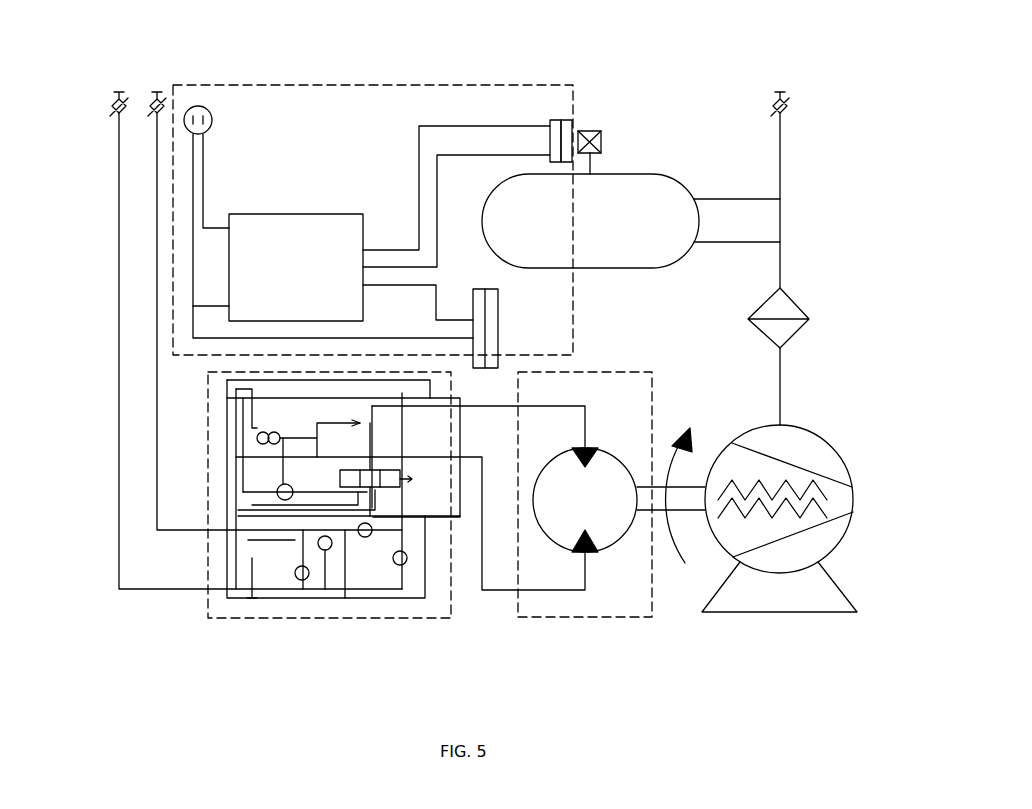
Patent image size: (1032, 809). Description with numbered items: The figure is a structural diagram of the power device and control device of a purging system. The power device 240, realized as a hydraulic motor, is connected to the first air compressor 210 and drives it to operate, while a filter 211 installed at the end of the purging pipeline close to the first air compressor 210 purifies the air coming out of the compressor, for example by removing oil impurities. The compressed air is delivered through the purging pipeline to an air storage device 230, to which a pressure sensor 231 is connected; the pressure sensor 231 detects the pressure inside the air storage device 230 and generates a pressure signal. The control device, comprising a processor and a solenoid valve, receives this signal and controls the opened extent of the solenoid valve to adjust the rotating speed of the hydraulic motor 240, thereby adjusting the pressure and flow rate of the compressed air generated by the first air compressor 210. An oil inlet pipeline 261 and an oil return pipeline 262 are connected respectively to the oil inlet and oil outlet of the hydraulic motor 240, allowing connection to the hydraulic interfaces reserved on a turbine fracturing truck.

The first air compressor 210 is at (818, 598).
The filter 211 is at (790, 293).
The air storage device 230 is at (608, 195).
The pressure sensor 231 is at (589, 120).
The power device 240 is at (568, 617).
The oil inlet pipeline 261 is at (119, 172).
The oil return pipeline 262 is at (157, 218).